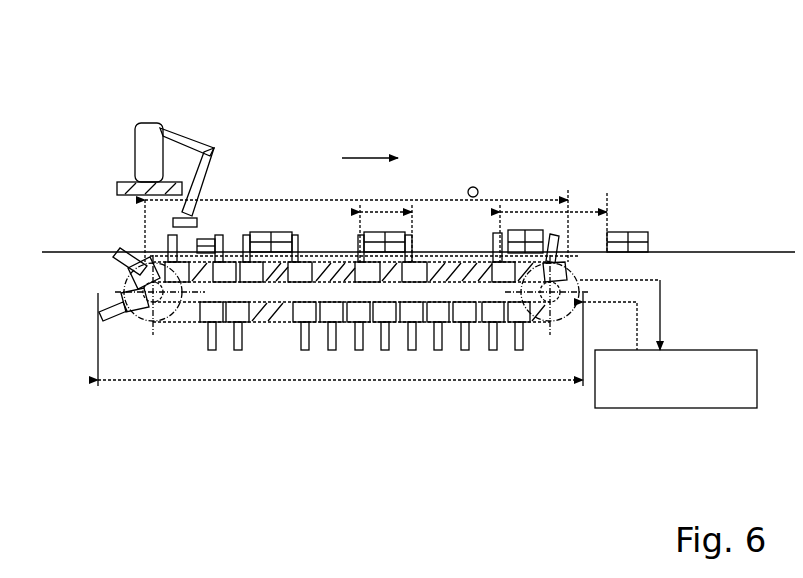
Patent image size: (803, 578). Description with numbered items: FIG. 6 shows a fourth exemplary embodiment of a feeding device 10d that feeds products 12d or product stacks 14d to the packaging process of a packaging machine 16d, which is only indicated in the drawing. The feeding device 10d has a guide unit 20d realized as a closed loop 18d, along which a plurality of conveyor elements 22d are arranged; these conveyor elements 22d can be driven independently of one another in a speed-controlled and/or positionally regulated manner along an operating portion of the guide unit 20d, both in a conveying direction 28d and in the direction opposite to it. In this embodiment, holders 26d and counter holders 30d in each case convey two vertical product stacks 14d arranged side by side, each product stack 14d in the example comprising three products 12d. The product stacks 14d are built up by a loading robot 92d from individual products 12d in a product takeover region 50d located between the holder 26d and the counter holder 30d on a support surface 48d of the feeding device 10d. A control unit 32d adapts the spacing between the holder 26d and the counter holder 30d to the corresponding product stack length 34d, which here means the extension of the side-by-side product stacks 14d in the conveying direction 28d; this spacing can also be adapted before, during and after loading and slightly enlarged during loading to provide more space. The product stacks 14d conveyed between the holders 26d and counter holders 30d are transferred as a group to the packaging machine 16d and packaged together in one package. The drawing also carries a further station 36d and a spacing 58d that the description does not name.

The feeding device 10d is at (585, 155).
The product 12d is at (207, 238).
The product stack 14d is at (297, 220).
The packaging machine 16d is at (497, 165).
The closed loop 18d is at (193, 313).
The guide unit 20d is at (93, 264).
The conveyor element 22d is at (505, 228).
The holder 26d is at (243, 240).
The conveying direction 28d is at (367, 157).
The counter holder 30d is at (303, 237).
The control unit 32d is at (656, 377).
The product stack length 34d is at (422, 257).
The discharge station 36d is at (508, 234).
The support surface 48d is at (137, 243).
The product takeover region 50d is at (213, 175).
The pitch distance 58d is at (548, 173).
The loading robot 92d is at (182, 133).